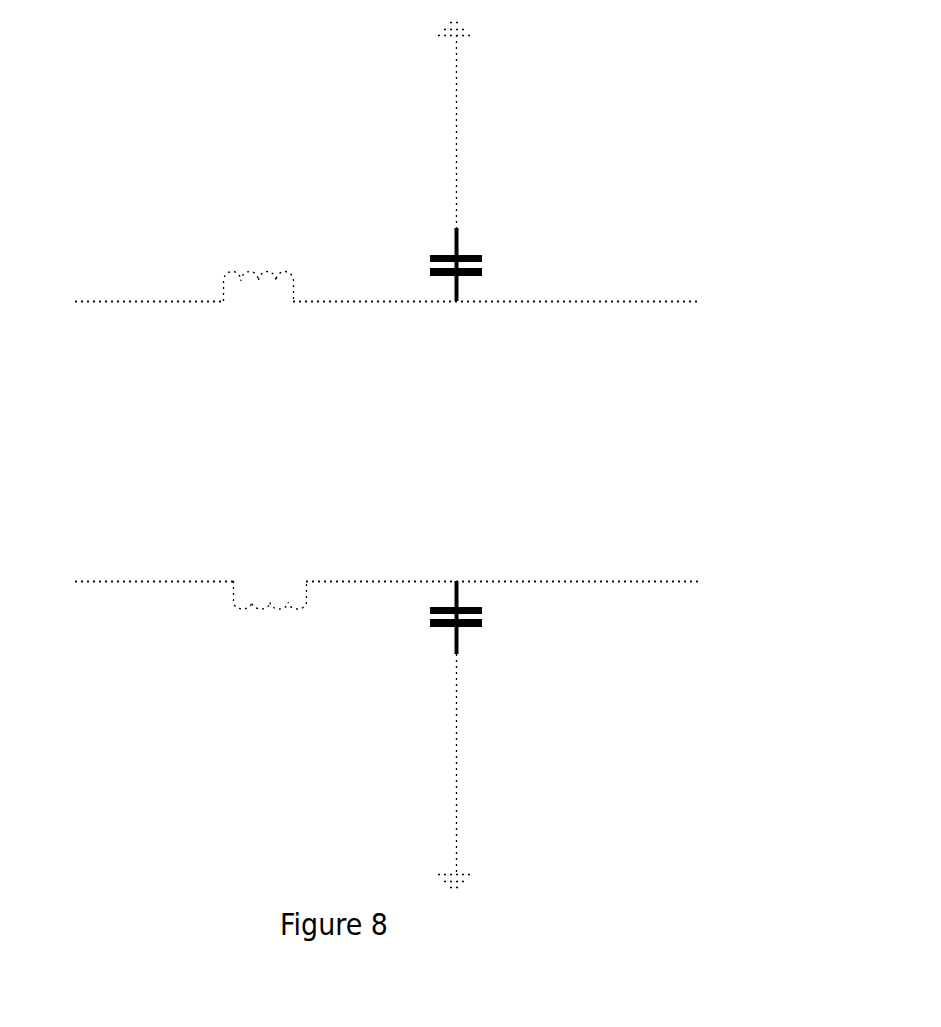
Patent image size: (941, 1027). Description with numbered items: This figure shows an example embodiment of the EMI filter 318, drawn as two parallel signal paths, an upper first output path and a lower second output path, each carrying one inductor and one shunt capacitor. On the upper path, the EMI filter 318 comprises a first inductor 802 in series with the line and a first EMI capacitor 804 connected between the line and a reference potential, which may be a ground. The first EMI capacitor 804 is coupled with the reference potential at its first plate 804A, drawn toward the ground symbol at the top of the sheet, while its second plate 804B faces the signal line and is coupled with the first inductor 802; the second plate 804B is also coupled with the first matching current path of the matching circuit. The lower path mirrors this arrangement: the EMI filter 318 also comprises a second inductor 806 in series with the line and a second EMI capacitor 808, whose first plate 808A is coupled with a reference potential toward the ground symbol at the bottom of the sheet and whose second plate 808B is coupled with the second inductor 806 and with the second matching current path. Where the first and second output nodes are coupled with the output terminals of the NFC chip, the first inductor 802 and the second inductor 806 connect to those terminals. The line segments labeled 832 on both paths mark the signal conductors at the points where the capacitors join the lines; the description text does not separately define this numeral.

The EMI filter 318 is at (815, 118).
The first inductor 802 is at (252, 268).
The first EMI capacitor 804 is at (427, 249).
The first plate of the first EMI capacitor 804A is at (470, 249).
The second plate of the first EMI capacitor 804B is at (470, 283).
The second inductor 806 is at (264, 601).
The second EMI capacitor 808 is at (430, 627).
The first plate of the second EMI capacitor 808A is at (470, 638).
The second plate of the second EMI capacitor 808B is at (490, 612).
The RF output line 832 is at (410, 306).